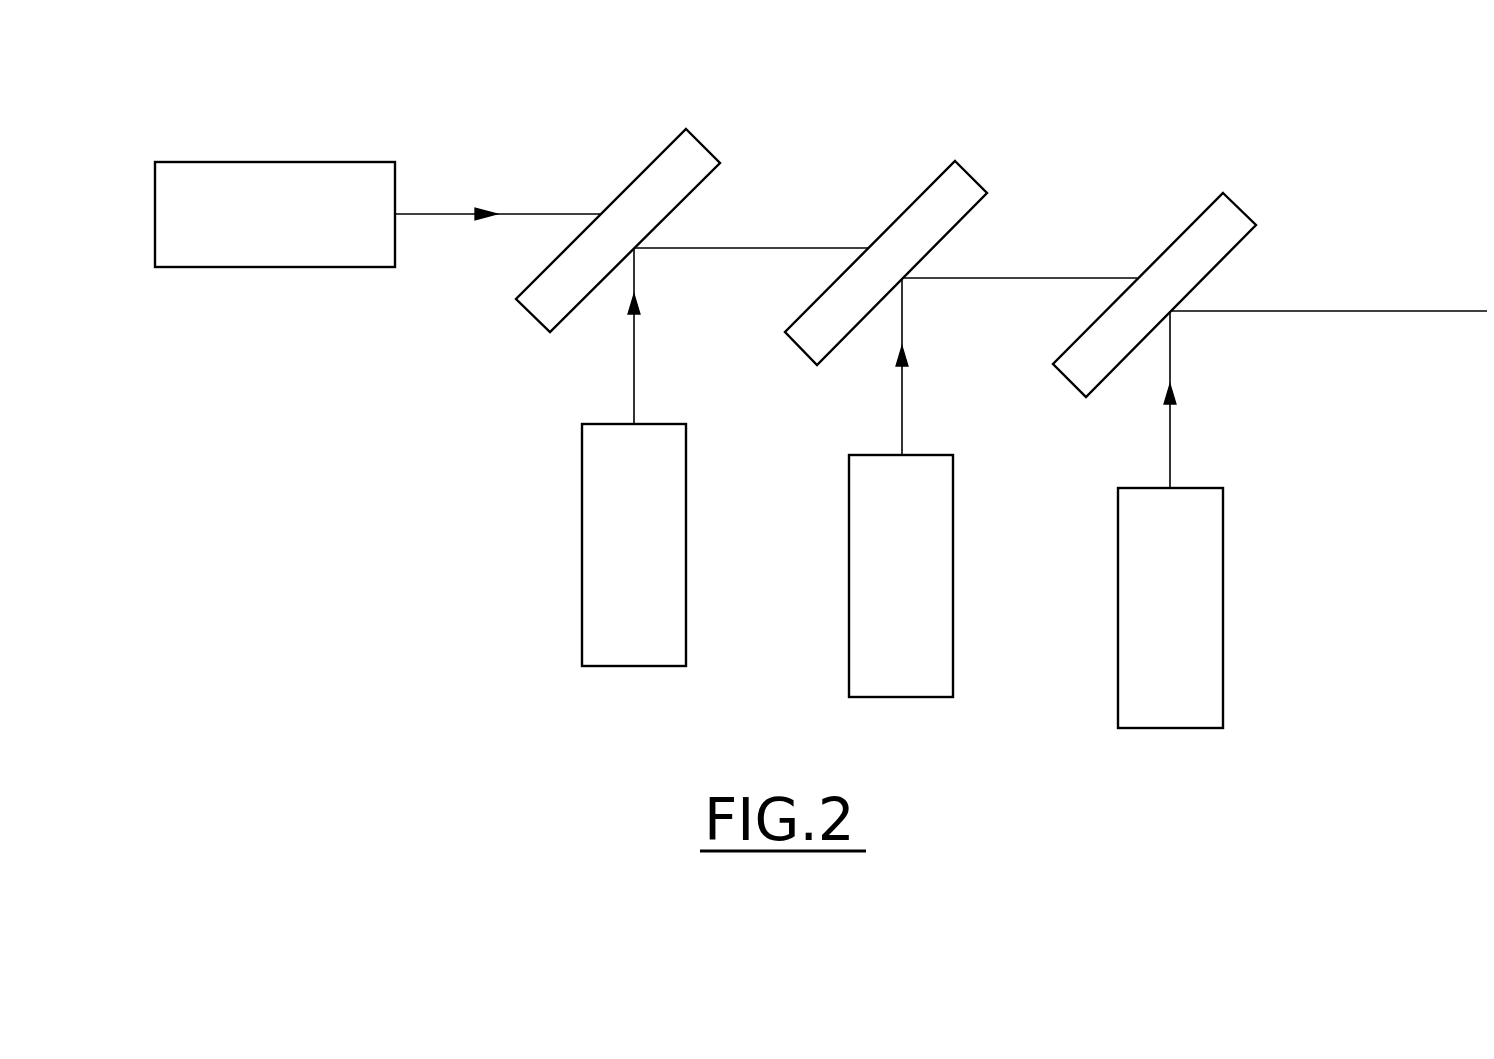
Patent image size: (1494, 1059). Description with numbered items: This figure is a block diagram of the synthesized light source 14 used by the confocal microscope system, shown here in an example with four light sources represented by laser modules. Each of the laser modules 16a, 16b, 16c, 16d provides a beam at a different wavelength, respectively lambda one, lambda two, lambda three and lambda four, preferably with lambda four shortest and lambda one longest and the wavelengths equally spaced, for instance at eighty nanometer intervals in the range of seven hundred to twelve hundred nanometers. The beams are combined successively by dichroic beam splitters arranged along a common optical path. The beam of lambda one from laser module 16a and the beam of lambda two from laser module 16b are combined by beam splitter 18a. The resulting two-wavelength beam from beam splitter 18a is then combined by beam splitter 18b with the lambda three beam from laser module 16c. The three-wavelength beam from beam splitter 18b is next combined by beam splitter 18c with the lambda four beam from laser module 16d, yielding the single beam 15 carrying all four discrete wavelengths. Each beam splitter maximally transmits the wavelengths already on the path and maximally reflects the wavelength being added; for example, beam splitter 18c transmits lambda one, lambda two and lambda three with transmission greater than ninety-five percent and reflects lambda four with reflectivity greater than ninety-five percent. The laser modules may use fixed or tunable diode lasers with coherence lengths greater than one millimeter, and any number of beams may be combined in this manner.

The synthesized light source 14 is at (792, 47).
The single beam 15 is at (1327, 313).
The laser module 16a is at (293, 268).
The laser module 16b is at (582, 640).
The laser module 16c is at (849, 668).
The laser module 16d is at (1118, 700).
The dichroic beam splitter 18a is at (627, 186).
The dichroic beam splitter 18b is at (922, 186).
The dichroic beam splitter 18c is at (1173, 238).